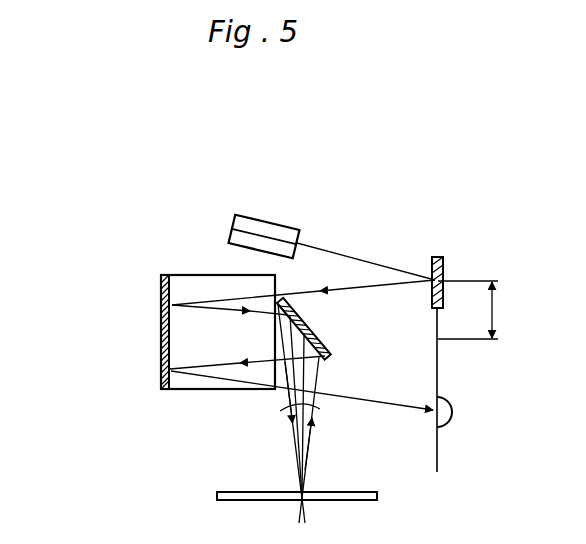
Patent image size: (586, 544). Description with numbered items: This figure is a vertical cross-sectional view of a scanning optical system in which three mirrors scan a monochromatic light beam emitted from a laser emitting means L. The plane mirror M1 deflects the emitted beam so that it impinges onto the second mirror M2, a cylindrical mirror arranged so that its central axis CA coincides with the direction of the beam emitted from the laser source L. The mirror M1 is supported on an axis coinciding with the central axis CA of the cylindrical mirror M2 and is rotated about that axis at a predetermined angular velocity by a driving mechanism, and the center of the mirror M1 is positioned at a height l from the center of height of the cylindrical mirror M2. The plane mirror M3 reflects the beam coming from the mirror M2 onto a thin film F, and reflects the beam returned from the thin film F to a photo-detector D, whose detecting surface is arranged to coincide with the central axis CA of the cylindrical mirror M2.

The laser emitting means L is at (268, 217).
The plane mirror M1 is at (443, 268).
The cylindrical mirror M2 is at (160, 287).
The plane mirror M3 is at (293, 310).
The height l is at (473, 310).
The central axis CA is at (440, 368).
The photo-detector D is at (452, 420).
The thin film F is at (377, 496).